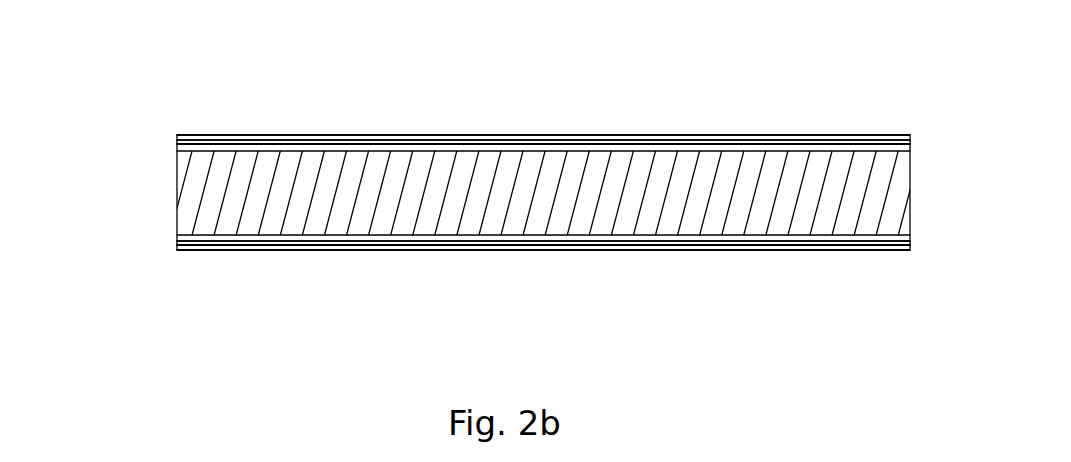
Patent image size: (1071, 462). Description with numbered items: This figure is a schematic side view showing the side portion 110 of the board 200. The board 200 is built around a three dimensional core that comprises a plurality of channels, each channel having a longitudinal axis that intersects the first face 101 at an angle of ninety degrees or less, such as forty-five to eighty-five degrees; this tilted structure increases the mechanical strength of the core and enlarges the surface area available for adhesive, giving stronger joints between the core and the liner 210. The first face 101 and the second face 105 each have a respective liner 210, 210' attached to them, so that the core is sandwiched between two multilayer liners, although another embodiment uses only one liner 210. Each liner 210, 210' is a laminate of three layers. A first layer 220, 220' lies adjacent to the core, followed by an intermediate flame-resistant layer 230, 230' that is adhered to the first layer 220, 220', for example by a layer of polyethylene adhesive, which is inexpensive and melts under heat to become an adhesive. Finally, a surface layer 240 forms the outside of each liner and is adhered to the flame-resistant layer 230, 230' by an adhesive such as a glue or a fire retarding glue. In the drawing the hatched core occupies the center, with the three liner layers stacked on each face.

The first face 101 is at (543, 131).
The second face 105 is at (543, 306).
The side portion 110 is at (520, 211).
The board 200 is at (688, 278).
The liner 210 is at (481, 113).
The liner 210' is at (484, 285).
The first layer 220 is at (543, 103).
The first layer 220' is at (536, 292).
The flame-resistant layer 230 is at (543, 92).
The flame-resistant layer 230' is at (543, 298).
The surface layer 240 is at (543, 201).